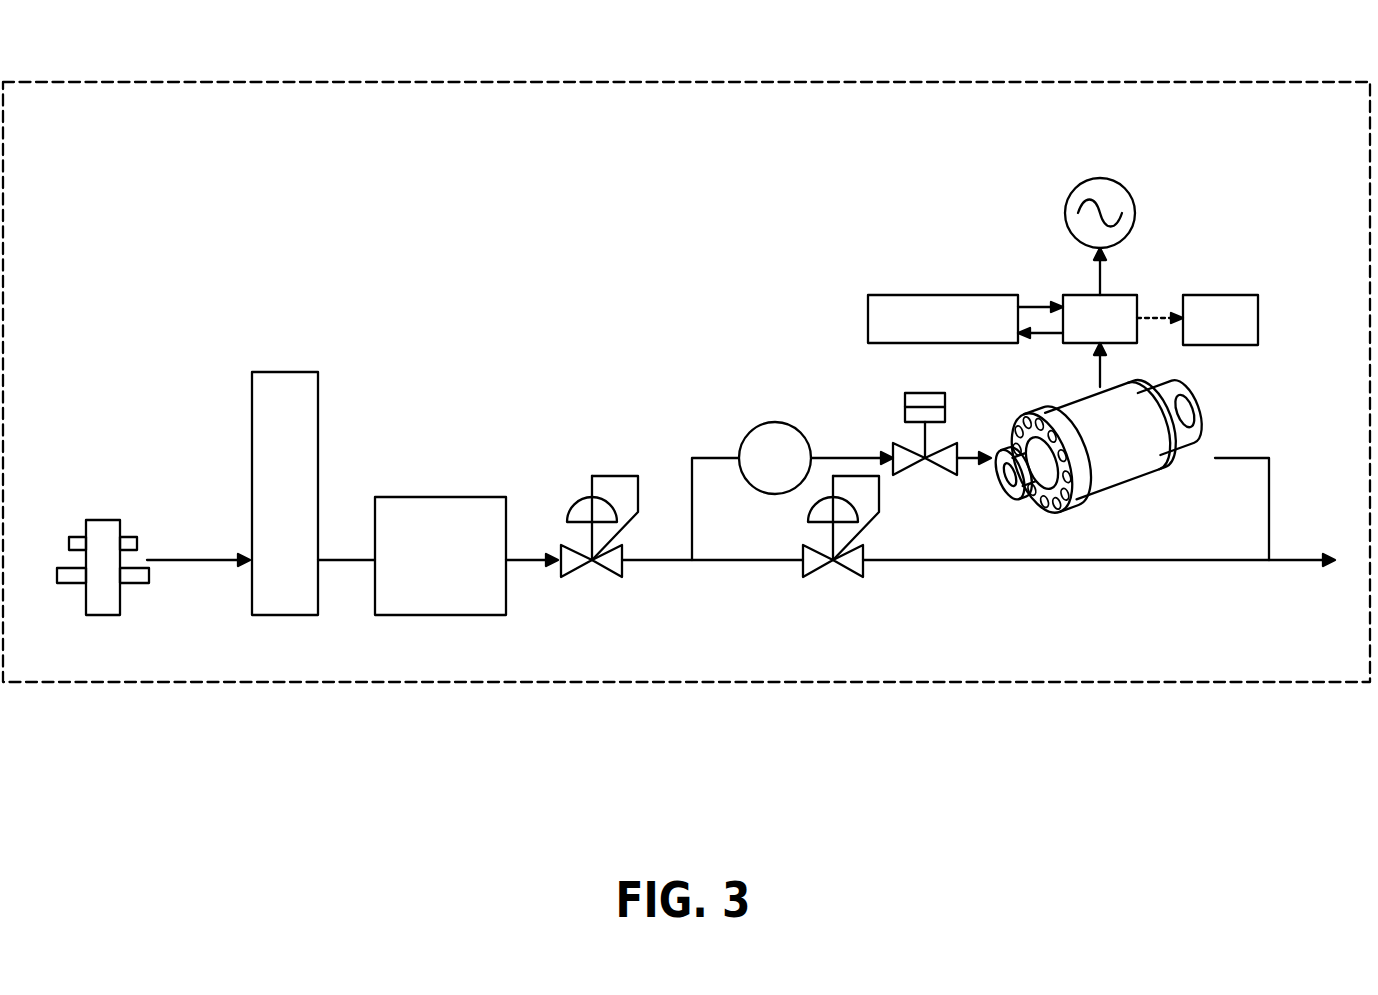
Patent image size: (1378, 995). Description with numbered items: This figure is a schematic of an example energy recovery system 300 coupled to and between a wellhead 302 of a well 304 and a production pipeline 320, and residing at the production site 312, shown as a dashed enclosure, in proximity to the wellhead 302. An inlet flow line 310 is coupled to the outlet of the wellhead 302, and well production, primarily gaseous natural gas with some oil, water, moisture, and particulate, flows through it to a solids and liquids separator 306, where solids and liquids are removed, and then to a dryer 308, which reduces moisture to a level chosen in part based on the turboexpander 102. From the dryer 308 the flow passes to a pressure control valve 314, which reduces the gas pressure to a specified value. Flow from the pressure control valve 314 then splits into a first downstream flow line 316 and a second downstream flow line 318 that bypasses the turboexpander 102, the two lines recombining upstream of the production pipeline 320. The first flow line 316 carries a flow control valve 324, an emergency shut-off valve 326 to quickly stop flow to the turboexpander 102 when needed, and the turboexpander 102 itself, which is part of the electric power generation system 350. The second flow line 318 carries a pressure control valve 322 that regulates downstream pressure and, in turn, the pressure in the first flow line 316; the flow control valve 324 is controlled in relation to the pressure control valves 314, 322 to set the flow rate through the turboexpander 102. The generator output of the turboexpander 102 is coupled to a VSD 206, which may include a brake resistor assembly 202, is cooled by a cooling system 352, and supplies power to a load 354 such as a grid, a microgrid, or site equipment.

The turboexpander 102 is at (1205, 412).
The brake resistor assembly 202 is at (1232, 295).
The VSD 206 is at (1130, 295).
The energy recovery system 300 is at (459, 235).
The wellhead 302 is at (103, 520).
The well 304 is at (140, 627).
The separator 306 is at (300, 372).
The dryer 308 is at (478, 497).
The inlet flow line 310 is at (190, 558).
The production site 312 is at (1192, 82).
The pressure control valve 314 is at (622, 578).
The first downstream flow line 316 is at (708, 455).
The second downstream flow line 318 is at (705, 563).
The production pipeline 320 is at (1295, 558).
The pressure control valve 322 is at (863, 578).
The flow control valve 324 is at (775, 422).
The emergency shut-off valve 326 is at (893, 443).
The electric power generation system 350 is at (1163, 160).
The cooling system 352 is at (945, 295).
The load 354 is at (1098, 178).